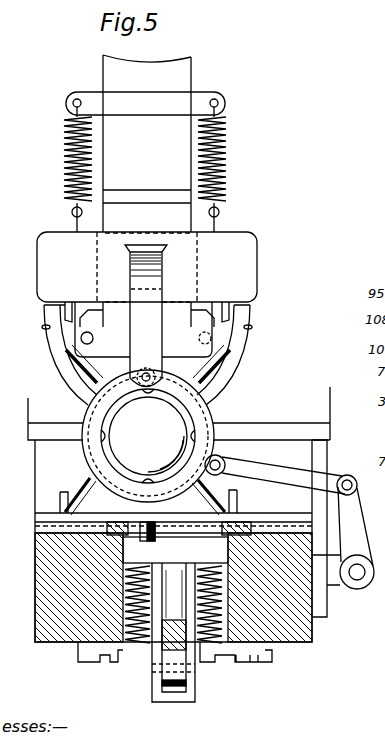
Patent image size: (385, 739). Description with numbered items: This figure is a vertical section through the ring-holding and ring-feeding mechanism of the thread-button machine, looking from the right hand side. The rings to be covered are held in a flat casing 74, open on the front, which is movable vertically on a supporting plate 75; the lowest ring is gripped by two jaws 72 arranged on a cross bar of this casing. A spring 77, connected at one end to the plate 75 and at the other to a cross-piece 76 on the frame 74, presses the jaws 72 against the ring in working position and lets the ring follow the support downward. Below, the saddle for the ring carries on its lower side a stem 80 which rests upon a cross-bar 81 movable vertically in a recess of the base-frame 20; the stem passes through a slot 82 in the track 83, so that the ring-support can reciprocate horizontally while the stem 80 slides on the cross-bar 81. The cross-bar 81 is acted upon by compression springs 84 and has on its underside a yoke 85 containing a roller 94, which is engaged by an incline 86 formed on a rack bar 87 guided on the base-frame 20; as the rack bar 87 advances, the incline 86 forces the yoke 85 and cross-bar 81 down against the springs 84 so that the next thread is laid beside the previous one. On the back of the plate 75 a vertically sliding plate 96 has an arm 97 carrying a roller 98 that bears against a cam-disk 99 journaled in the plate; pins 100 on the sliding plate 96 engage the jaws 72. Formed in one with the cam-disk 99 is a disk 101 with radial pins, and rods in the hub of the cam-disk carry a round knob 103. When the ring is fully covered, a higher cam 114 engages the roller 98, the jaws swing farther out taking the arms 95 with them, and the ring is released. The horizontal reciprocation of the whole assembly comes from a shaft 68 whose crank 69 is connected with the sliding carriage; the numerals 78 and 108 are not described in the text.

The base-frame 20 is at (41, 639).
The shaft 68 is at (357, 582).
The crank 69 is at (357, 497).
The jaws 72 is at (75, 327).
The flat casing 74 is at (103, 70).
The supporting plate 75 is at (50, 238).
The cross-piece 76 is at (196, 100).
The spring 77 is at (65, 146).
The lever arm 78 is at (246, 461).
The stem 80 is at (141, 541).
The cross-bar 81 is at (220, 522).
The slot 82 is at (186, 538).
The track 83 is at (273, 522).
The compression springs 84 is at (136, 647).
The yoke 85 is at (196, 695).
The incline 86 is at (168, 622).
The rack bar 87 is at (166, 602).
The roller 94 is at (164, 677).
The arms 95 is at (45, 309).
The vertically sliding plate 96 is at (182, 250).
The arm 97 is at (163, 266).
The roller 98 is at (140, 393).
The cam-disk 99 is at (108, 447).
The pins 100 is at (73, 330).
The disk 101 is at (105, 471).
The round knob 103 is at (126, 421).
The lugs 108 is at (88, 310).
The higher cam 114 is at (190, 406).